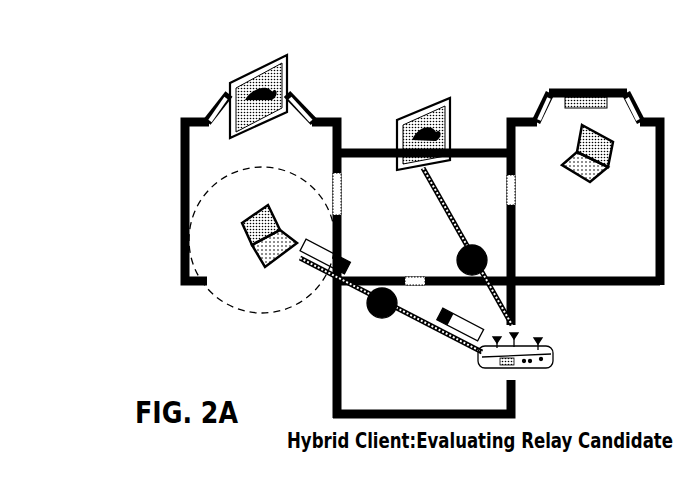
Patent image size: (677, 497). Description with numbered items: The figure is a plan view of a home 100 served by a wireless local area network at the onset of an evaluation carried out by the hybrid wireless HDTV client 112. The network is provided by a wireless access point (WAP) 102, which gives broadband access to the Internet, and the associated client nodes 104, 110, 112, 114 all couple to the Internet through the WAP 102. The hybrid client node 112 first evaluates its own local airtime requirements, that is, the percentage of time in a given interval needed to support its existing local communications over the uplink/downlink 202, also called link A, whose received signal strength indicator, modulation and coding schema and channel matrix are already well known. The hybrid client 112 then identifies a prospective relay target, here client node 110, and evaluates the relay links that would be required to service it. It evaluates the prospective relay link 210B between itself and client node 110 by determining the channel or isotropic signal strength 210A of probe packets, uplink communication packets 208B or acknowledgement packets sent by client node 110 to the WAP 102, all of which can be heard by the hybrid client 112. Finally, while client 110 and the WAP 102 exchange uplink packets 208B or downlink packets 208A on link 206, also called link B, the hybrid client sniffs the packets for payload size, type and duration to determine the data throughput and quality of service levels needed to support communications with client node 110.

The home 100 is at (185, 287).
The wireless access point 102 is at (536, 366).
The client node 104 is at (578, 155).
The client node 110 is at (245, 228).
The hybrid wireless client node 112 is at (422, 113).
The client node 114 is at (233, 84).
The uplink/downlink 202 is at (444, 200).
The link 206 is at (382, 318).
The downlink packets 208A is at (468, 324).
The uplink communication packets 208B is at (340, 250).
The isotropic signal strength 210A is at (283, 313).
The prospective relay link 210B is at (350, 174).